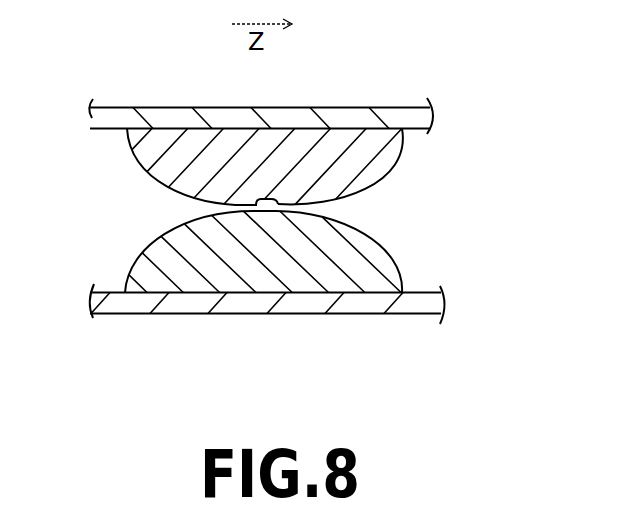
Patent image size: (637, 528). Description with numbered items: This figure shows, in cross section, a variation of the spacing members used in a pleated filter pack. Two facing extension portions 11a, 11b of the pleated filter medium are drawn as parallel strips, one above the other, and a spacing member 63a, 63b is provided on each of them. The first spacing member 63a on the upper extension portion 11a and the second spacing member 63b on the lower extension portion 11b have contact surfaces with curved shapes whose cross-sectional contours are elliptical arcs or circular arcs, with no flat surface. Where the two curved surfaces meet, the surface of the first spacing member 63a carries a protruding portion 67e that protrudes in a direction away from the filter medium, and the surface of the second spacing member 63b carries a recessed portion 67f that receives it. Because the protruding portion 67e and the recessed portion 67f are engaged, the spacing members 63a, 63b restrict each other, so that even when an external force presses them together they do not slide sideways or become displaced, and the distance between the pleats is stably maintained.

The extension portion 11a is at (116, 107).
The extension portion 11b is at (116, 314).
The spacing member 63a is at (143, 167).
The spacing member 63b is at (139, 262).
The protruding portion 67e is at (258, 199).
The recessed portion 67f is at (265, 212).